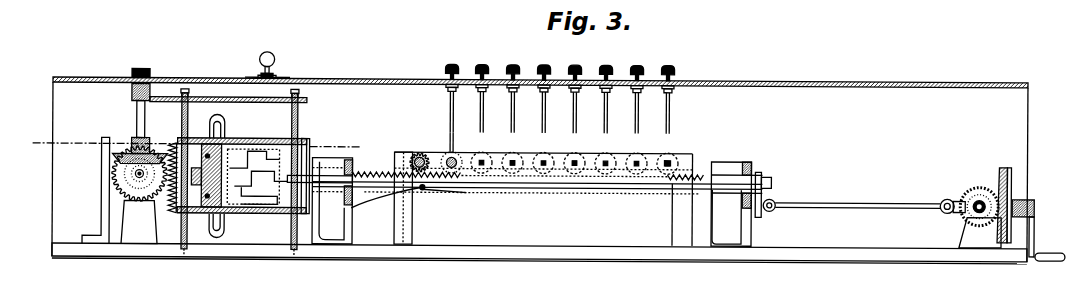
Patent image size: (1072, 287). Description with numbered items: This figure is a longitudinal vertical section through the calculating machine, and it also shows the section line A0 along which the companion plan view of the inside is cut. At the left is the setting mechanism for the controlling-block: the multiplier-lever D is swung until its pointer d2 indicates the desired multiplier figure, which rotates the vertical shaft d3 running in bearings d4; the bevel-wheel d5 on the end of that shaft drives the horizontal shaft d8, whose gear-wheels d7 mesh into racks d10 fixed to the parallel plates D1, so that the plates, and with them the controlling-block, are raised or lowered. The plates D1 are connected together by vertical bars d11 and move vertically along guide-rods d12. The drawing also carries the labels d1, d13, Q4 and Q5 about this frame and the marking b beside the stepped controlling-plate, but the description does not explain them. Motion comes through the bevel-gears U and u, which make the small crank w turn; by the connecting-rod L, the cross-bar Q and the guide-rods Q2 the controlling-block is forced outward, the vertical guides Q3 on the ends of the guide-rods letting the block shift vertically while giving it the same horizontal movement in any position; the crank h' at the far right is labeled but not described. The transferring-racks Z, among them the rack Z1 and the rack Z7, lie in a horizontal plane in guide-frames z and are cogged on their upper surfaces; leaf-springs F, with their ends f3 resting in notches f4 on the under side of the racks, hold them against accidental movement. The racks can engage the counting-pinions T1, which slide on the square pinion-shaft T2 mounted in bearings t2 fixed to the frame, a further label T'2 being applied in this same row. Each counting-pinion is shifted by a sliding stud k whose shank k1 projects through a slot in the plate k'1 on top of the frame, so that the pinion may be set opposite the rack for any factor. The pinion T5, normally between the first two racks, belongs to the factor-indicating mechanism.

The plate k'1 is at (540, 73).
The multiplier-lever D is at (203, 77).
The knob d1 is at (275, 58).
The pointer d2 is at (292, 76).
The vertical shaft d3 is at (130, 119).
The bearings d4 is at (146, 120).
The cross bar d13 is at (308, 99).
The plate Q4 is at (197, 247).
The parallel plates D1 is at (257, 268).
The guide-rods d12 is at (310, 121).
The vertical guides Q3 is at (243, 161).
The vertical bars d11 is at (312, 140).
The stepped contact b is at (262, 212).
The lower loop Q5 is at (230, 227).
The bevel-wheel d5 is at (112, 160).
The gear-wheels d7 is at (112, 186).
The horizontal shaft d8 is at (139, 221).
The racks d10 is at (170, 215).
The section line A0 is at (200, 143).
The transferring-rack Z1 is at (331, 183).
The racks Z is at (371, 172).
The leaf-springs F is at (393, 210).
The sliding stud k is at (572, 88).
The shanks k1 is at (448, 140).
The pinion T5 is at (430, 154).
The counting-pinions T1 is at (480, 152).
The transferring-rack Z7 is at (606, 188).
The guide-rods Q2 is at (529, 190).
The bearings t2 is at (660, 156).
The pinion-shaft T2 is at (513, 168).
The contact T'2 is at (606, 201).
The spring ends f3 is at (425, 190).
The notches f4 is at (455, 191).
The cross-bar Q is at (770, 195).
The guide-frames z is at (752, 172).
The connecting-rod L is at (848, 206).
The small crank w is at (948, 210).
The bevel-gear u is at (981, 186).
The bevel-gear U is at (1013, 181).
The crank h' is at (1038, 230).